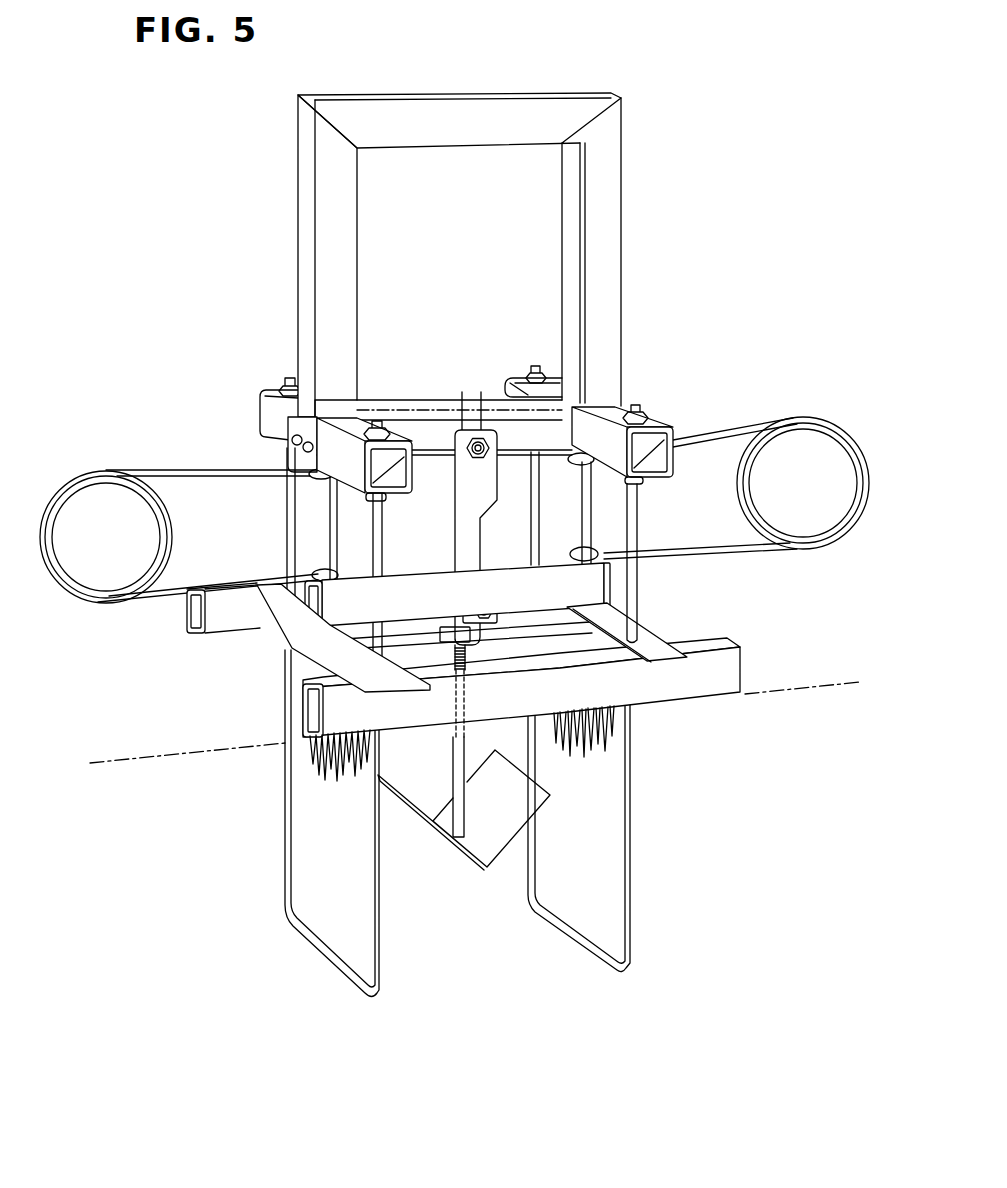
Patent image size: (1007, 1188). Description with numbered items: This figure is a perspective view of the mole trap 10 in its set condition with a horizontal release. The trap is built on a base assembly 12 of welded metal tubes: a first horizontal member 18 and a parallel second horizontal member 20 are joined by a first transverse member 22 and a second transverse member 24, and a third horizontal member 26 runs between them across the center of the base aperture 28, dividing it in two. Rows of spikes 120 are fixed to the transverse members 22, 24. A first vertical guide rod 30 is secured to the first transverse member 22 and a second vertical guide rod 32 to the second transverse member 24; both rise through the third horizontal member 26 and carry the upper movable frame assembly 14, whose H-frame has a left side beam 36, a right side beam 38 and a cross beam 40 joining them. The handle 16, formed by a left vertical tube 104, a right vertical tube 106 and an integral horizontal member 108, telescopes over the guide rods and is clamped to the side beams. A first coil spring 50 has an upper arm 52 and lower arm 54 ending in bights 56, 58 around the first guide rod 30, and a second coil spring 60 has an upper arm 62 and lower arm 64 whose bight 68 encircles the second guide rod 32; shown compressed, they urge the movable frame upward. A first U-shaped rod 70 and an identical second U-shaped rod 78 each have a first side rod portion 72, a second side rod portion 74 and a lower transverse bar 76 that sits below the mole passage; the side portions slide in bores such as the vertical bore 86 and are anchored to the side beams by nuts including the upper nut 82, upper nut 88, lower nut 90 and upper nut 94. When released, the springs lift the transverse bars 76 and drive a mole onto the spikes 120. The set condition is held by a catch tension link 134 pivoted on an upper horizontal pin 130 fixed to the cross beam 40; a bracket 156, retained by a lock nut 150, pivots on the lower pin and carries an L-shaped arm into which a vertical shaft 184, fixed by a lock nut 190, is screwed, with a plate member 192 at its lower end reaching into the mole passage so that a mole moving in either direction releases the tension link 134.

The mole trap 10 is at (210, 288).
The base assembly 12 is at (482, 742).
The upper movable frame assembly 14 is at (240, 406).
The handle 16 is at (462, 229).
The first horizontal member 18 is at (195, 631).
The second horizontal member 20 is at (497, 698).
The first transverse member 22 is at (282, 636).
The second transverse member 24 is at (655, 645).
The third horizontal member 26 is at (297, 640).
The base aperture 28 is at (490, 632).
The first vertical guide rod 30 is at (330, 540).
The second vertical guide rod 32 is at (588, 535).
The left side beam 36 is at (268, 389).
The right side beam 38 is at (668, 432).
The cross beam 40 is at (432, 402).
The first coil spring 50 is at (78, 591).
The upper arm 52 is at (165, 466).
The lower arm 54 is at (150, 603).
The bight 56 is at (312, 477).
The bight 58 is at (315, 577).
The second coil spring 60 is at (858, 430).
The upper arm 62 is at (745, 432).
The lower arm 64 is at (760, 560).
The bight 68 is at (600, 555).
The first U-shaped rod 70 is at (283, 830).
The first side rod portion 72 is at (283, 868).
The second side rod portion 74 is at (380, 945).
The lower transverse bar 76 is at (313, 955).
The second U-shaped rod 78 is at (630, 855).
The upper nut 82 is at (288, 378).
The vertical bore 86 is at (306, 685).
The upper nut 88 is at (385, 428).
The lower nut 90 is at (373, 505).
The upper nut 94 is at (533, 367).
The left vertical tube 104 is at (300, 240).
The right vertical tube 106 is at (615, 243).
The integral horizontal member 108 is at (510, 93).
The spikes 120 is at (336, 785).
The upper horizontal pin 130 is at (490, 432).
The catch tension link 134 is at (458, 422).
The lock nut 150 is at (500, 610).
The bracket 156 is at (485, 595).
The vertical shaft 184 is at (453, 788).
The lock nut 190 is at (440, 636).
The plate member 192 is at (470, 866).